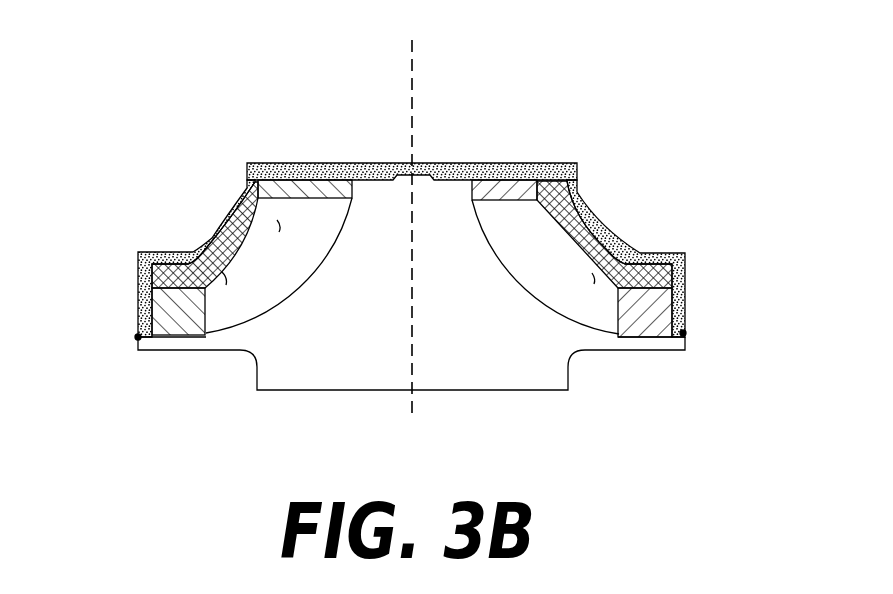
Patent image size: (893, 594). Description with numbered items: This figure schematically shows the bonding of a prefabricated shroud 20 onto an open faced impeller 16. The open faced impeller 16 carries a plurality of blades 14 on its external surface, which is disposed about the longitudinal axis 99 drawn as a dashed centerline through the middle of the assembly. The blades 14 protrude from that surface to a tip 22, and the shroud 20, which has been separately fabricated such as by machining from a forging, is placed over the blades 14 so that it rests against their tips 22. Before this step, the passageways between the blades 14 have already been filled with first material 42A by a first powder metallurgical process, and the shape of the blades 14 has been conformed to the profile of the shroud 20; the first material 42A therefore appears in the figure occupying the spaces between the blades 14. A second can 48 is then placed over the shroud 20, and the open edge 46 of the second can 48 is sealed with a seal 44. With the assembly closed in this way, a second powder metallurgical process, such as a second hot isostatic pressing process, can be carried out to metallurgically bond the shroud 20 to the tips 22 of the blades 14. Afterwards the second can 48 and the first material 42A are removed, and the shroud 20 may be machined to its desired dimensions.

The longitudinal axis 99 is at (413, 43).
The open faced impeller 16 is at (292, 398).
The second can 48 is at (290, 166).
The blades 14 is at (202, 242).
The shroud 20 is at (230, 217).
The tip 22 is at (233, 190).
The first material 42A is at (513, 182).
The open edge 46 is at (140, 307).
The seal 44 is at (138, 337).